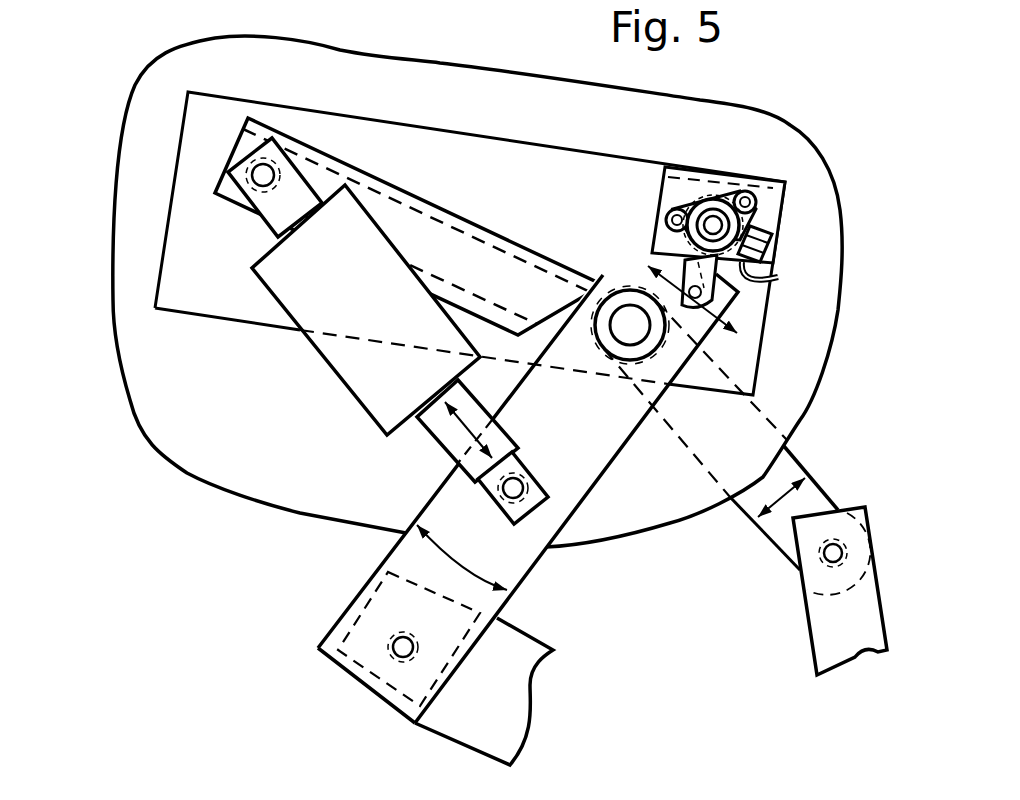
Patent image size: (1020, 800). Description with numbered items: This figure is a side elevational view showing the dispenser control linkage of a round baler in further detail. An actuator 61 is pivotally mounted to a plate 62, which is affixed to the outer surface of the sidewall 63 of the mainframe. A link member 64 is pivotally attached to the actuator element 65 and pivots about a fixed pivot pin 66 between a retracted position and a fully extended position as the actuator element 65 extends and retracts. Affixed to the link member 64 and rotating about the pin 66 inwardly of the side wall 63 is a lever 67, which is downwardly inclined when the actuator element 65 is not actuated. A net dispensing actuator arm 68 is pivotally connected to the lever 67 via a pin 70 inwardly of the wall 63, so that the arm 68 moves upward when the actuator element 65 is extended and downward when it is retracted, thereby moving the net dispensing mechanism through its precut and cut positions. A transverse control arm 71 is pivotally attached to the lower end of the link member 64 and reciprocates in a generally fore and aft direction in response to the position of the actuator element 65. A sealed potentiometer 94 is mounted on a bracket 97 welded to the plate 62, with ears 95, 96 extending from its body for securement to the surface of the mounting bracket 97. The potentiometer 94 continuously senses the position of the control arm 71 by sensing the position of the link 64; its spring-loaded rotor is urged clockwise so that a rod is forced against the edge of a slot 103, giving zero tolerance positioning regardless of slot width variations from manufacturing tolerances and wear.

The actuator 61 is at (373, 383).
The plate 62 is at (410, 150).
The sidewall 63 is at (200, 384).
The link member 64 is at (513, 562).
The actuator element 65 is at (433, 447).
The fixed pivot pin 66 is at (629, 320).
The lever 67 is at (820, 480).
The net dispensing actuator arm 68 is at (823, 642).
The pin 70 is at (820, 555).
The transverse control arm 71 is at (503, 693).
The potentiometer 94 is at (739, 220).
The ear 95 is at (673, 212).
The ear 96 is at (752, 194).
The mounting bracket 97 is at (675, 186).
The slot 103 is at (683, 307).